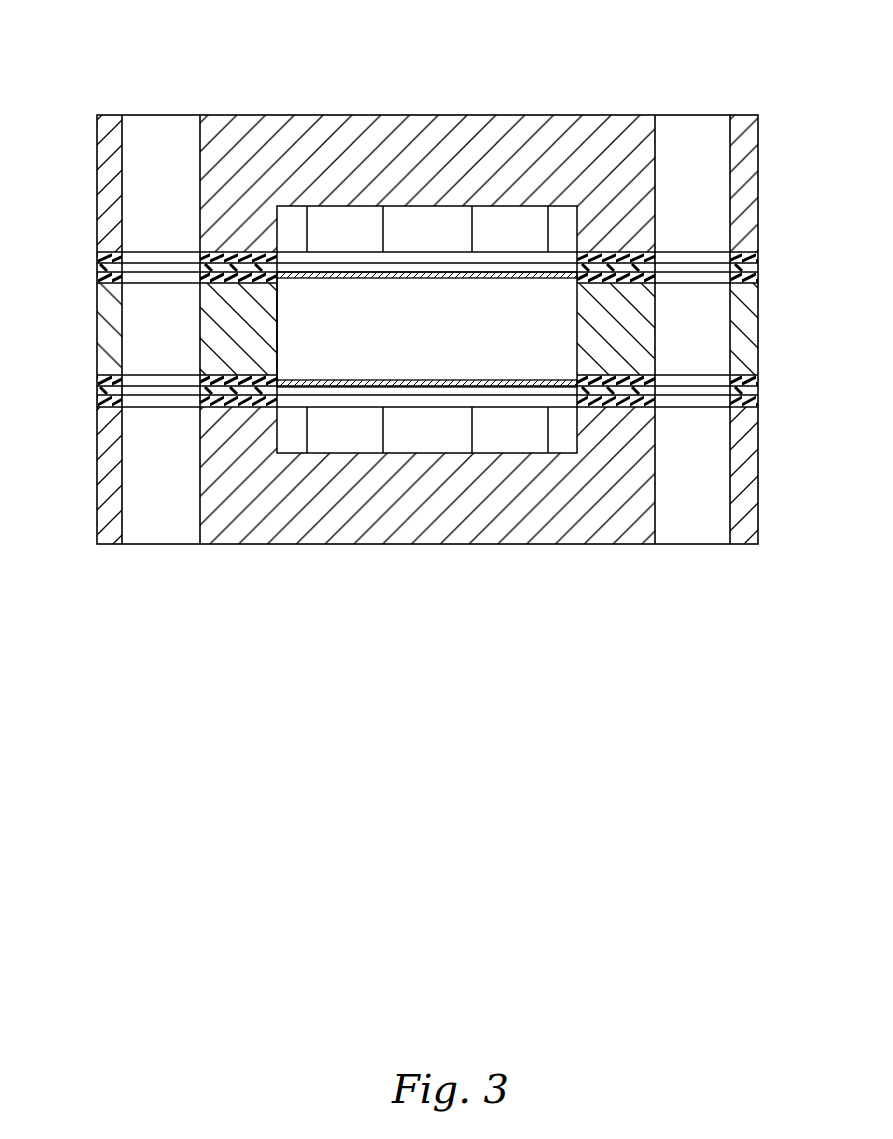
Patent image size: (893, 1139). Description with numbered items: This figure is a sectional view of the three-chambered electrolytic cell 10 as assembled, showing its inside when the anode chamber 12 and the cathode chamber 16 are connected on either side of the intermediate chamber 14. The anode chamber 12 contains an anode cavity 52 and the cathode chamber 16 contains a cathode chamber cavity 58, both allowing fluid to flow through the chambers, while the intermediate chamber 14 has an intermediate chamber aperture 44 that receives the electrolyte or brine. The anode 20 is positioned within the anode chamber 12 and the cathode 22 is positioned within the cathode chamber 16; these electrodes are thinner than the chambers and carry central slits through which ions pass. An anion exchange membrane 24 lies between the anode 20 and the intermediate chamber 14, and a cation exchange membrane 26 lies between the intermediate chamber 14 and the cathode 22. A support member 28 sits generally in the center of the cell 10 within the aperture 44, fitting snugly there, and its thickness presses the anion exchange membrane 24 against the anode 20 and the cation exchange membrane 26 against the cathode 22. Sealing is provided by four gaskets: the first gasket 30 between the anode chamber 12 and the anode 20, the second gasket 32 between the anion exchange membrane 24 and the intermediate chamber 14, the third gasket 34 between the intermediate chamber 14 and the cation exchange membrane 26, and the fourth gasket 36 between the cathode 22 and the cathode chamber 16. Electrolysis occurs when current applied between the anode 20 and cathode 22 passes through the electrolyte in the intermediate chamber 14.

The electrolytic cell 10 is at (667, 51).
The anode chamber 12 is at (759, 463).
The intermediate chamber 14 is at (759, 313).
The cathode chamber 16 is at (759, 178).
The anode 20 is at (759, 266).
The cathode 22 is at (759, 388).
The anion exchange membrane 24 is at (498, 278).
The cation exchange membrane 26 is at (360, 381).
The support member 28 is at (436, 340).
The first gasket 30 is at (97, 402).
The second gasket 32 is at (97, 379).
The third gasket 34 is at (97, 279).
The fourth gasket 36 is at (97, 256).
The intermediate chamber aperture 44 is at (278, 310).
The anode cavity 52 is at (436, 440).
The cathode chamber cavity 58 is at (436, 243).